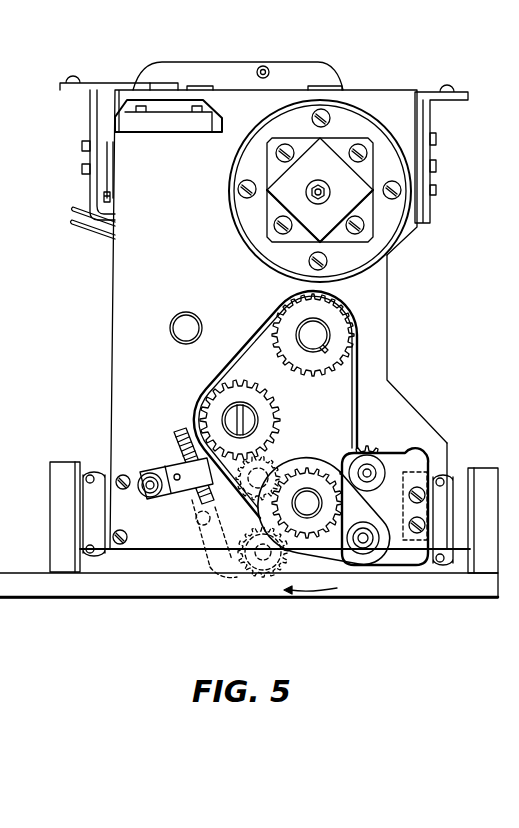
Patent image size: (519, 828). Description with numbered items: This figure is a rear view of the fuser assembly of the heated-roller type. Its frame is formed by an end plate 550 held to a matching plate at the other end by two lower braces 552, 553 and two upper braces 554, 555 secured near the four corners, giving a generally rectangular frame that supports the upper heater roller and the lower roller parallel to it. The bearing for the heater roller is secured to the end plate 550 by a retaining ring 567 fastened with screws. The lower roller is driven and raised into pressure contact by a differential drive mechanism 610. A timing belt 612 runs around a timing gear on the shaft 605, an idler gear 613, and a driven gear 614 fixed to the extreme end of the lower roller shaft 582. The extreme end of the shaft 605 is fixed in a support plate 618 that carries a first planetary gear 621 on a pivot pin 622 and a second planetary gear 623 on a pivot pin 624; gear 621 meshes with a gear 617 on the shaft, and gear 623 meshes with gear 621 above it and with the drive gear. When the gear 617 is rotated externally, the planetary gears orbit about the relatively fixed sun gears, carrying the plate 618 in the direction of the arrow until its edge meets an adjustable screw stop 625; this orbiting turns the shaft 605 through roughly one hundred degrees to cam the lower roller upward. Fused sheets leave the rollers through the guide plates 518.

The guide plates 518 is at (84, 231).
The end plate 550 is at (112, 337).
The lower brace 552 is at (440, 573).
The lower brace 553 is at (275, 521).
The upper brace 554 is at (423, 218).
The upper brace 555 is at (106, 166).
The retaining ring 567 is at (244, 168).
The lower roller shaft 582 is at (325, 330).
The shaft 605 is at (311, 493).
The differential drive mechanism 610 is at (246, 331).
The timing belt 612 is at (222, 370).
The idler gear 613 is at (205, 402).
The driven gear 614 is at (360, 326).
The gear 617 is at (270, 508).
The support plate 618 is at (414, 567).
The first planetary gear 621 is at (368, 448).
The pivot pin 622 is at (372, 472).
The second planetary gear 623 is at (350, 568).
The pivot pin 624 is at (365, 540).
The screw stop 625 is at (190, 496).